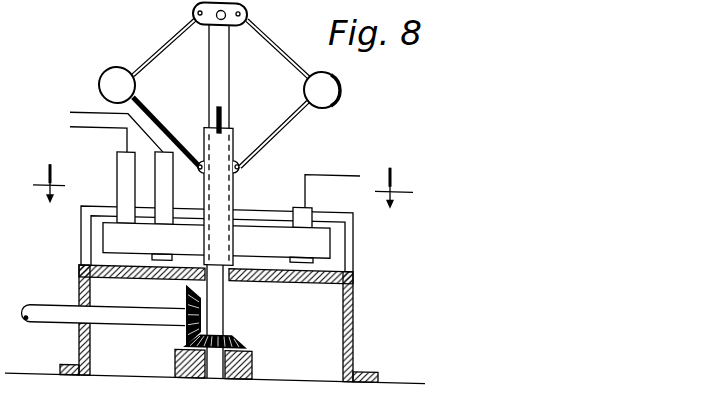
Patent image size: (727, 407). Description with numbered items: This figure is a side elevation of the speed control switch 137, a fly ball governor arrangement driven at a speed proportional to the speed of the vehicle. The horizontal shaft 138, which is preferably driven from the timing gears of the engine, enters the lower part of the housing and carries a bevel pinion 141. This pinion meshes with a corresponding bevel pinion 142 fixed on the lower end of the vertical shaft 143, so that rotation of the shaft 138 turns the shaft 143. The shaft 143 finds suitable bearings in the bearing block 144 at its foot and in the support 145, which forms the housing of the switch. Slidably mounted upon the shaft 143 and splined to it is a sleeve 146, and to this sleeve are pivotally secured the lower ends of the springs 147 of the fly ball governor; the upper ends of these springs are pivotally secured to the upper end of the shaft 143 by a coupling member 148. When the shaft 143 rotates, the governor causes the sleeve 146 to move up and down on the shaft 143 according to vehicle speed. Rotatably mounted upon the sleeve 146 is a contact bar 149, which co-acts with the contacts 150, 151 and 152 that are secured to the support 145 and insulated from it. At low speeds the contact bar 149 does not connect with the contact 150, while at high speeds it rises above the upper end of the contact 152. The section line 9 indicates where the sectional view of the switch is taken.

The section line 9- 9 is at (222, 186).
The speed control switch 137 is at (245, 123).
The shaft 138 is at (72, 310).
The bevel pinion 141 is at (185, 295).
The bevel pinion 142 is at (230, 329).
The shaft 143 is at (222, 303).
The bearing block 144 is at (253, 361).
The support 145 is at (350, 314).
The sleeve 146 is at (204, 128).
The springs 147 is at (288, 63).
The coupling member 148 is at (193, 7).
The contact bar 149 is at (325, 234).
The contact 150 is at (120, 172).
The contact 151 is at (163, 181).
The contact 152 is at (300, 200).